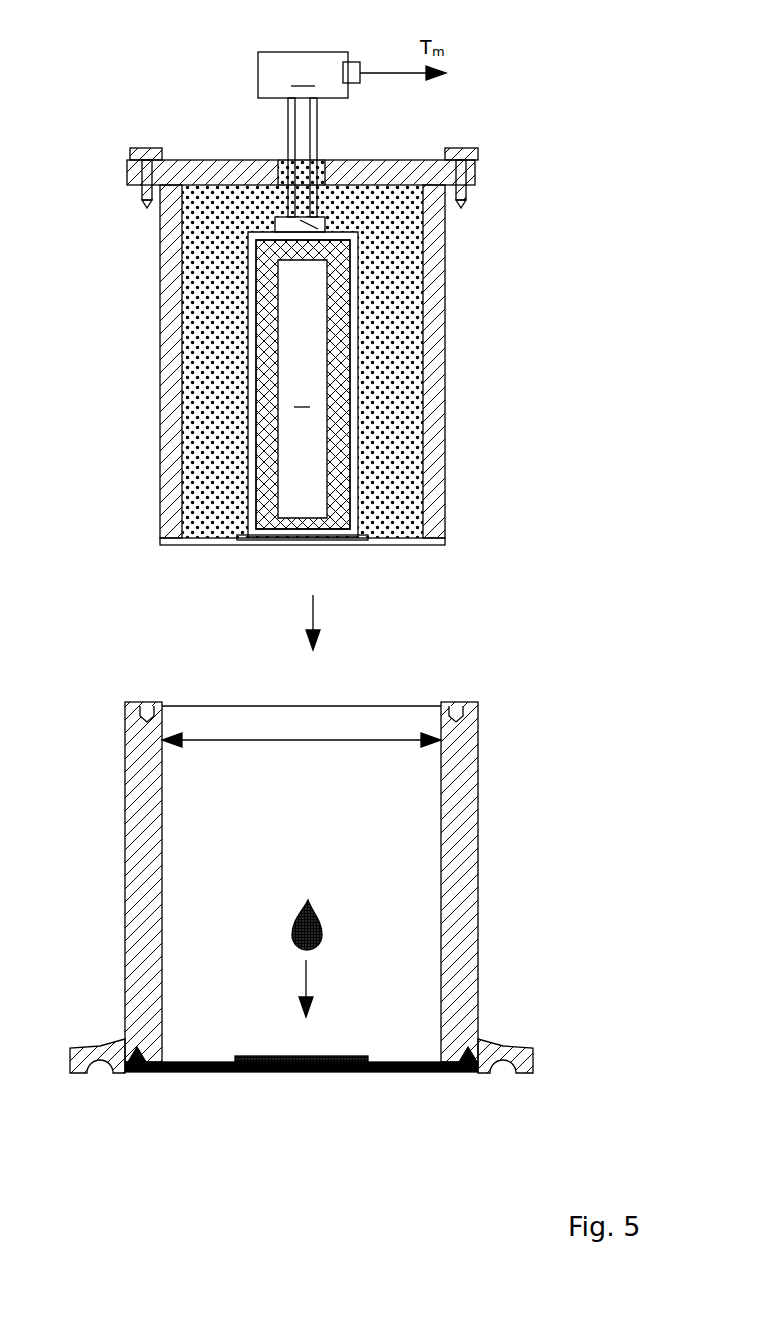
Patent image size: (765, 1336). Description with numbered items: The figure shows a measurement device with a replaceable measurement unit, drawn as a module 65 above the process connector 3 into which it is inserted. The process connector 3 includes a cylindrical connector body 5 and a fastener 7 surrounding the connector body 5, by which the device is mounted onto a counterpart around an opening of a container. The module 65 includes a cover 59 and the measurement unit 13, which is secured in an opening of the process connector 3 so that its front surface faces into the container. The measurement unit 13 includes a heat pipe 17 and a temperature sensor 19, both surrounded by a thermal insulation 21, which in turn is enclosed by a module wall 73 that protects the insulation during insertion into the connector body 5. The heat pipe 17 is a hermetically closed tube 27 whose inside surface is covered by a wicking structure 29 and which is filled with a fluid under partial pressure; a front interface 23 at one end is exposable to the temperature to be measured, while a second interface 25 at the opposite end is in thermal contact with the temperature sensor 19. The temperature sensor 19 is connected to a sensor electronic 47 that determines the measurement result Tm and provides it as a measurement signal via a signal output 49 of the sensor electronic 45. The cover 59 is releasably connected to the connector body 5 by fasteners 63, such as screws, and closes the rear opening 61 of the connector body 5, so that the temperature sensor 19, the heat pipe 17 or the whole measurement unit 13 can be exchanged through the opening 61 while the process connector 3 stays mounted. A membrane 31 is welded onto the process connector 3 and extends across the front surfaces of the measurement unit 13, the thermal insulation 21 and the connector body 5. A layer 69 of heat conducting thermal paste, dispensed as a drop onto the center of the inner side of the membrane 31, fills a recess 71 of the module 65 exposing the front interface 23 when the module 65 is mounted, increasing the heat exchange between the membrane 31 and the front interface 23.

The process connector 3 is at (323, 878).
The connector body 5 is at (467, 995).
The fastener 7 is at (485, 1042).
The measurement unit 13 is at (558, 143).
The heat pipe 17 is at (408, 384).
The temperature sensor 19 is at (312, 228).
The thermal insulation 21 is at (382, 397).
The front interface 23 is at (318, 543).
The second interface 25 is at (307, 227).
The tube 27 is at (353, 308).
The wicking structure 29 is at (347, 328).
The membrane 31 is at (222, 1068).
The sensor electronic 45 is at (288, 140).
The sensor electronic 47 is at (303, 75).
The signal output 49 is at (351, 72).
The cover 59 is at (383, 163).
The opening 61 is at (302, 740).
The fasteners 63 is at (148, 153).
The module 65 is at (598, 42).
The layer 69 is at (283, 1067).
The recess 71 is at (287, 543).
The module wall 73 is at (440, 373).